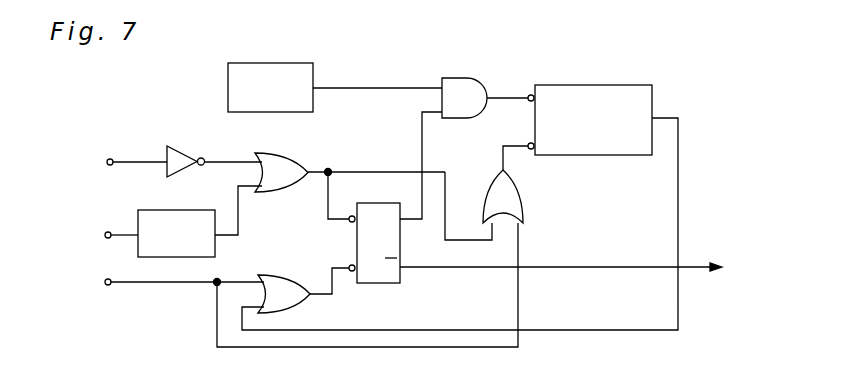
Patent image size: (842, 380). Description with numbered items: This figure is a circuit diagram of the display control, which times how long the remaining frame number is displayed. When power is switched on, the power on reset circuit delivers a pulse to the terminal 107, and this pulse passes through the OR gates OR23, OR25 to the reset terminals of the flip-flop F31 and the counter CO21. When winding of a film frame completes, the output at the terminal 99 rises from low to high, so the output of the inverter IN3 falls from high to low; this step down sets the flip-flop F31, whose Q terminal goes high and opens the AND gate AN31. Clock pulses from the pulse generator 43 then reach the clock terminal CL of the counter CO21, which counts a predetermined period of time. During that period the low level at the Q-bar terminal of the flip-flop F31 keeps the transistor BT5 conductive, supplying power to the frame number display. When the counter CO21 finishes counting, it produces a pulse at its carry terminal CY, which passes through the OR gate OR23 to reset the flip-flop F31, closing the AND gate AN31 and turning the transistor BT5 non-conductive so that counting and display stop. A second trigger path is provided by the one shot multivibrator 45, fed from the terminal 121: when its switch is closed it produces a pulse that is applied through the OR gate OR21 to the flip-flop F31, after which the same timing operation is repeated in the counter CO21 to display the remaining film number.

The terminal 99 is at (117, 163).
The inverter IN3 is at (185, 150).
The input terminal 121 is at (95, 237).
The one shot multivibrator 45 is at (202, 218).
The terminal 107 is at (285, 285).
The pulse generator 43 is at (282, 63).
The OR gate OR21 is at (290, 170).
The OR gate OR23 is at (283, 285).
The AND gate AN31 is at (465, 87).
The counter CO21 is at (600, 92).
The OR gate OR25 is at (513, 195).
The flip-flop F31 is at (382, 284).
The transistor BT5 is at (585, 268).